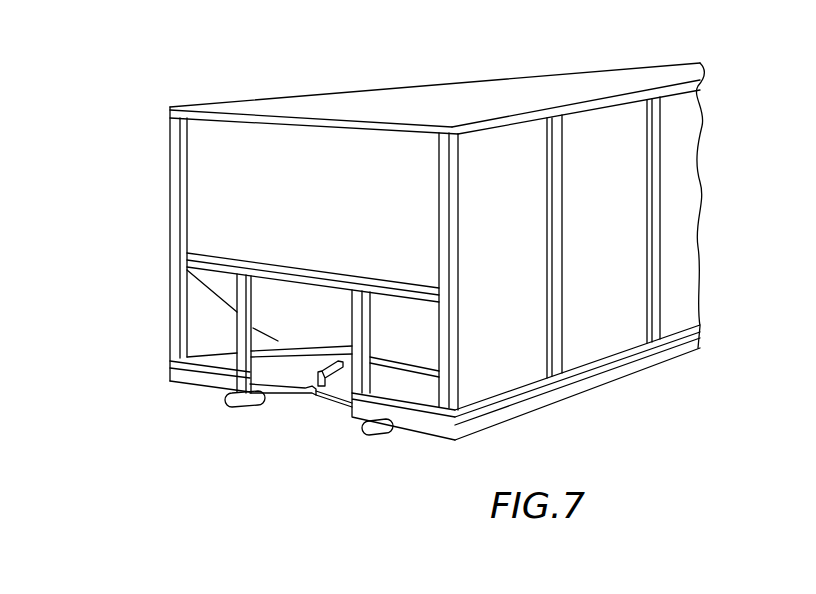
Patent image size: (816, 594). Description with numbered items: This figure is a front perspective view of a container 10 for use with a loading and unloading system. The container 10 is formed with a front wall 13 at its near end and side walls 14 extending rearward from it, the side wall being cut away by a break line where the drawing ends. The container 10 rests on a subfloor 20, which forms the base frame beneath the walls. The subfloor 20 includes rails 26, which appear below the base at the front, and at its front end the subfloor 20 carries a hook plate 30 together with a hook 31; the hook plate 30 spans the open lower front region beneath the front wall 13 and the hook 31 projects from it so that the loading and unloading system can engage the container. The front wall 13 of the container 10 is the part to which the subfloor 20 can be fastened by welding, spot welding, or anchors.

The container 10 is at (162, 160).
The front wall 13 is at (335, 207).
The side walls 14 is at (521, 280).
The subfloor 20 is at (662, 367).
The rails 26 is at (230, 397).
The hook plate 30 is at (320, 396).
The hook 31 is at (332, 367).